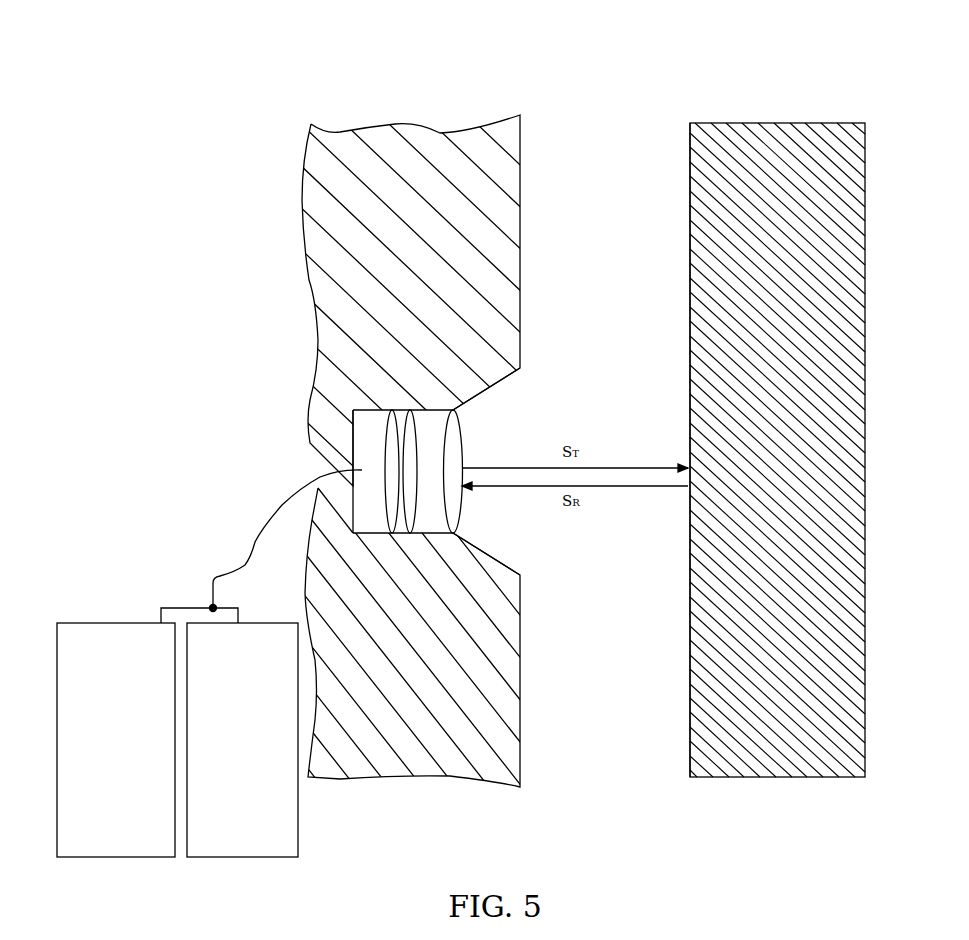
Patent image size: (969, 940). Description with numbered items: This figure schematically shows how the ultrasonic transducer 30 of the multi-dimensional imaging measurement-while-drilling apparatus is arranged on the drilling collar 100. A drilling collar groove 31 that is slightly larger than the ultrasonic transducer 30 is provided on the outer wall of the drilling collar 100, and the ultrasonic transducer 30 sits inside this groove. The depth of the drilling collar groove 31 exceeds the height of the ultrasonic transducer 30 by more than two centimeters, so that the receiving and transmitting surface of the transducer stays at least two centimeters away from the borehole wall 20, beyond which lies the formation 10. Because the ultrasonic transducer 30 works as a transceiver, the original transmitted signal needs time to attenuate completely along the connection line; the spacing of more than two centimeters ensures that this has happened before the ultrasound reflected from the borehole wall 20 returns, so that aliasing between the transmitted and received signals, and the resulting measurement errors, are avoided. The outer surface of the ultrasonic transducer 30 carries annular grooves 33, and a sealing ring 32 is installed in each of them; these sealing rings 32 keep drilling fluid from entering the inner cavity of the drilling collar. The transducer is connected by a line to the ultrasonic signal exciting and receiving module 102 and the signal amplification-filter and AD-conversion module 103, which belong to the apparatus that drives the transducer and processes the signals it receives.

The drilling collar 100 is at (377, 190).
The formation 10 is at (740, 195).
The borehole wall 20 is at (690, 165).
The ultrasonic transducer 30 is at (312, 435).
The drilling collar groove 31 is at (462, 390).
The sealing ring 32 is at (402, 459).
The annular groove 33 is at (372, 527).
The ultrasonic signal exciting and receiving module 102 is at (242, 740).
The signal amplification-filter and AD-conversion module 103 is at (116, 740).